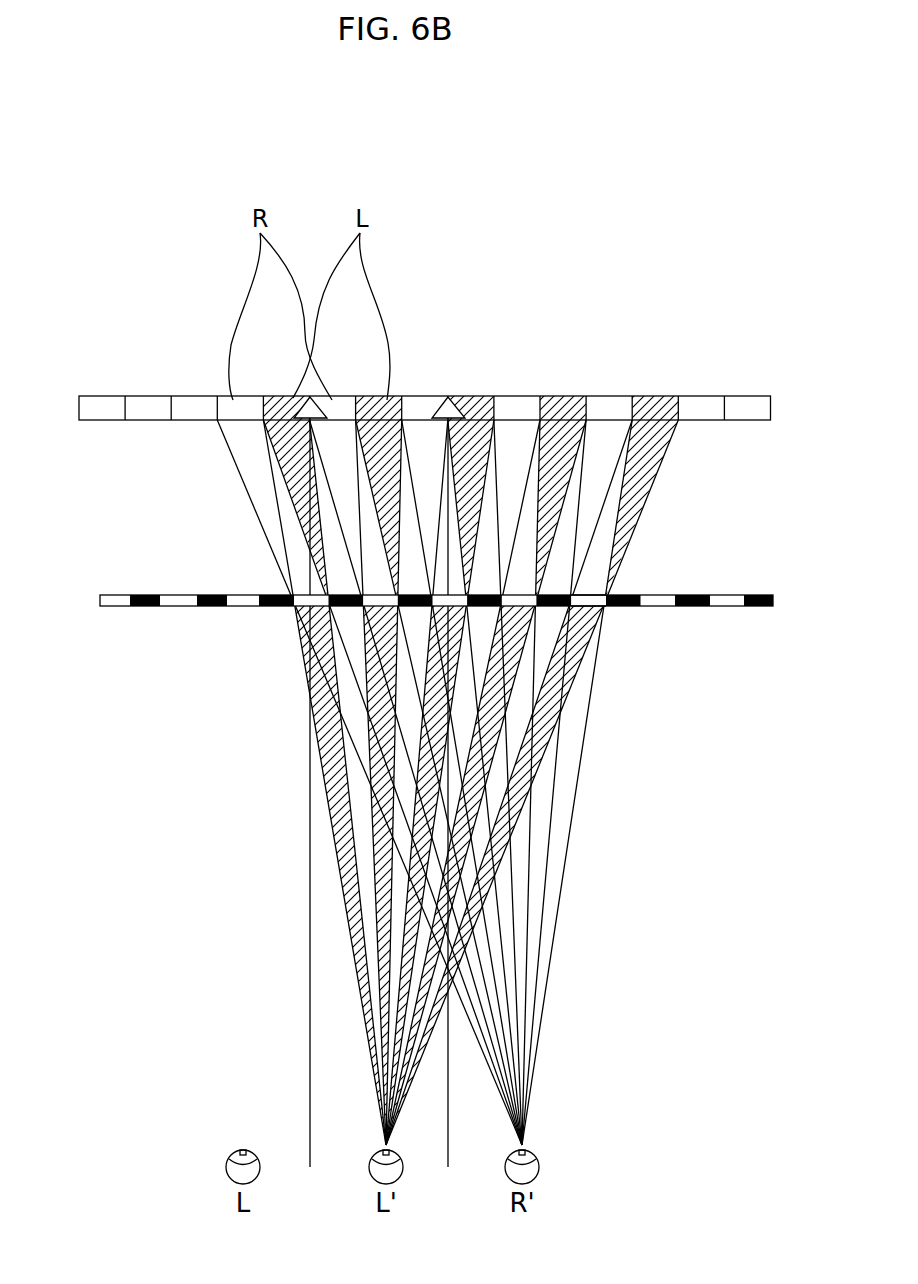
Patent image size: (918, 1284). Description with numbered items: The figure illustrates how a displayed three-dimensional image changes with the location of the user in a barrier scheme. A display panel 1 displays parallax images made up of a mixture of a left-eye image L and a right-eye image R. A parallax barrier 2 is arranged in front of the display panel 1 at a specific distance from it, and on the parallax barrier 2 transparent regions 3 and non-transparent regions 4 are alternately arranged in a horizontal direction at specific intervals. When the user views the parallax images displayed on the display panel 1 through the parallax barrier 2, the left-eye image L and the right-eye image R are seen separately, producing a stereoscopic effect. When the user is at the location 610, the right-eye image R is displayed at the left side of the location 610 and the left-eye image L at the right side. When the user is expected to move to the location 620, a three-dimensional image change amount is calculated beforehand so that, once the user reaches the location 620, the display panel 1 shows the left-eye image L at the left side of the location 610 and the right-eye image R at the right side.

The display panel 1 is at (79, 400).
The parallax barrier 2 is at (100, 600).
The transparent region 3 is at (555, 605).
The non-transparent region 4 is at (592, 605).
The location 610 is at (310, 398).
The location 620 is at (448, 397).